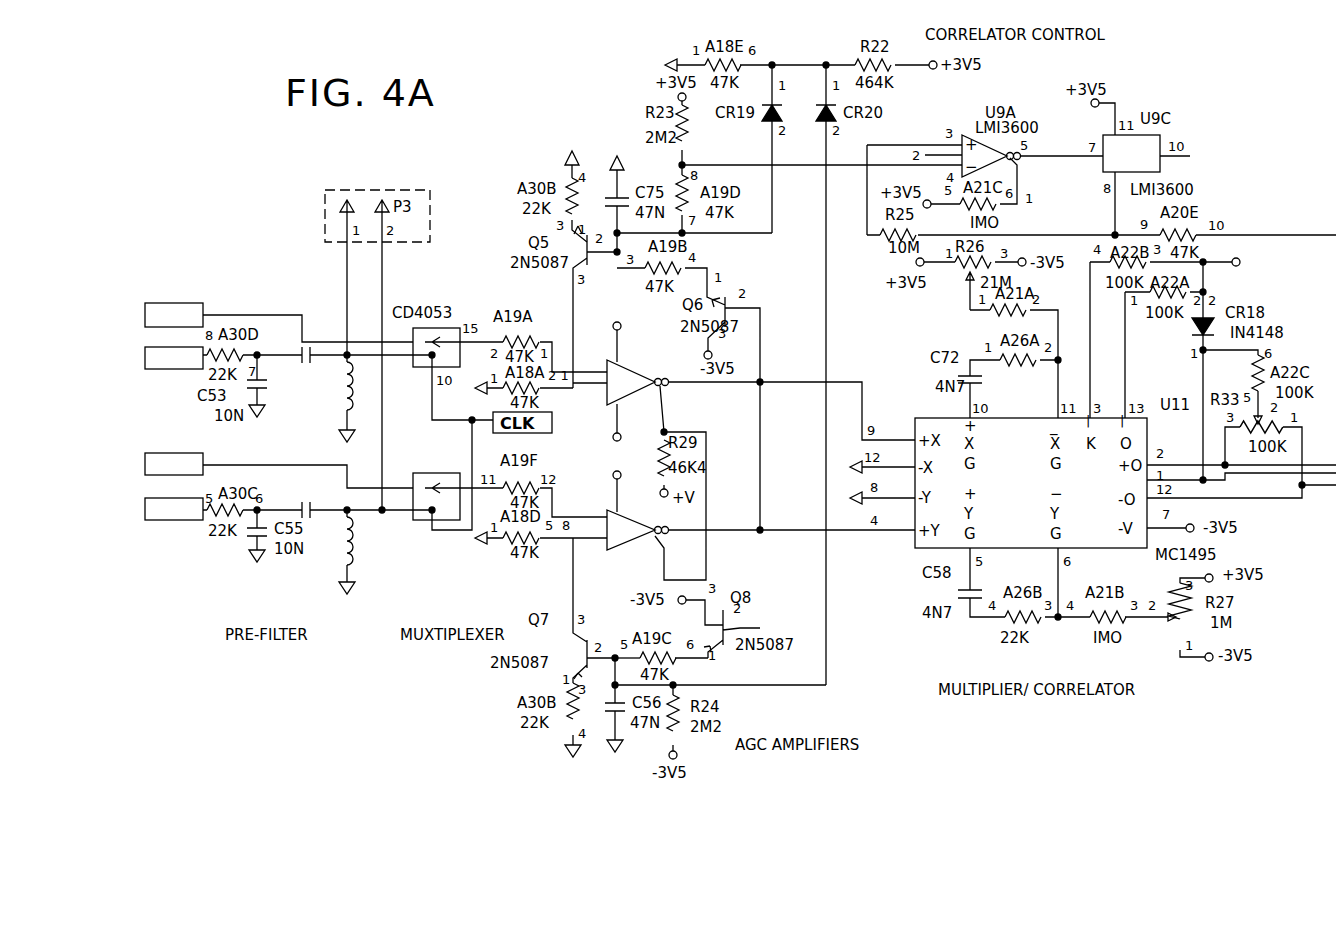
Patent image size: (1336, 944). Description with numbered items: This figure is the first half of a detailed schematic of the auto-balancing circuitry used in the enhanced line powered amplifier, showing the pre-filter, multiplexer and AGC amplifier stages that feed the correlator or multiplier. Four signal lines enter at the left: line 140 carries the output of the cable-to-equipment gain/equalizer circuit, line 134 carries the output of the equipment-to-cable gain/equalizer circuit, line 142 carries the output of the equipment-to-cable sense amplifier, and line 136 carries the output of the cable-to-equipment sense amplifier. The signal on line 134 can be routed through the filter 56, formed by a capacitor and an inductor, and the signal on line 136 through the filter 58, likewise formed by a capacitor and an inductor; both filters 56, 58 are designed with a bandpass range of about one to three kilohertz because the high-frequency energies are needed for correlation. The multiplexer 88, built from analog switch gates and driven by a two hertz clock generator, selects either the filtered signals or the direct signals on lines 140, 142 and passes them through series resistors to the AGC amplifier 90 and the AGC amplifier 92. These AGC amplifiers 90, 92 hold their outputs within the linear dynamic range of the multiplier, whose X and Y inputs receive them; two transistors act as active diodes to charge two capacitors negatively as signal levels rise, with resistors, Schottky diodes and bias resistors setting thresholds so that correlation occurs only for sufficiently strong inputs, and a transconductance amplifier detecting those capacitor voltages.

The line 140 is at (203, 312).
The line 134 is at (203, 362).
The line 142 is at (203, 462).
The line 136 is at (203, 514).
The filter 56 is at (300, 426).
The filter 58 is at (314, 486).
The multiplexer 88 is at (420, 575).
The AGC amplifier 90 is at (724, 411).
The AGC amplifier 92 is at (696, 556).